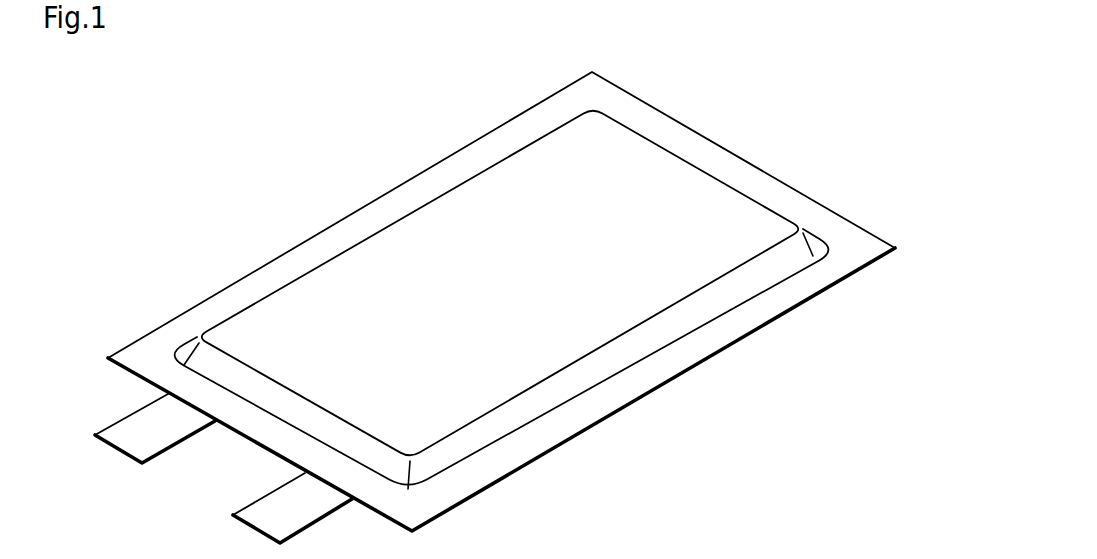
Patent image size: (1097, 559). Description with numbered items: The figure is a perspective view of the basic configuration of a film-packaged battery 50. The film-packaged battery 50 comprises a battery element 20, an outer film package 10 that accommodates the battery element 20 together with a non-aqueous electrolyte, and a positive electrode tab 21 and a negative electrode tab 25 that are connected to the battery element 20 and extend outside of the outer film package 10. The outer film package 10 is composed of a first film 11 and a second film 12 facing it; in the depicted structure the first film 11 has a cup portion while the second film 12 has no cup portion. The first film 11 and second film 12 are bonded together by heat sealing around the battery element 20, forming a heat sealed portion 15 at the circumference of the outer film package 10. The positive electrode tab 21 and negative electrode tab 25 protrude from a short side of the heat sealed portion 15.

The film-packaged battery 50 is at (268, 88).
The outer film package 10 is at (905, 157).
The first film 11 is at (848, 232).
The second film 12 is at (851, 276).
The heat sealed portion 15 is at (653, 373).
The battery element 20 is at (387, 256).
The positive electrode tab 21 is at (265, 517).
The negative electrode tab 25 is at (117, 438).